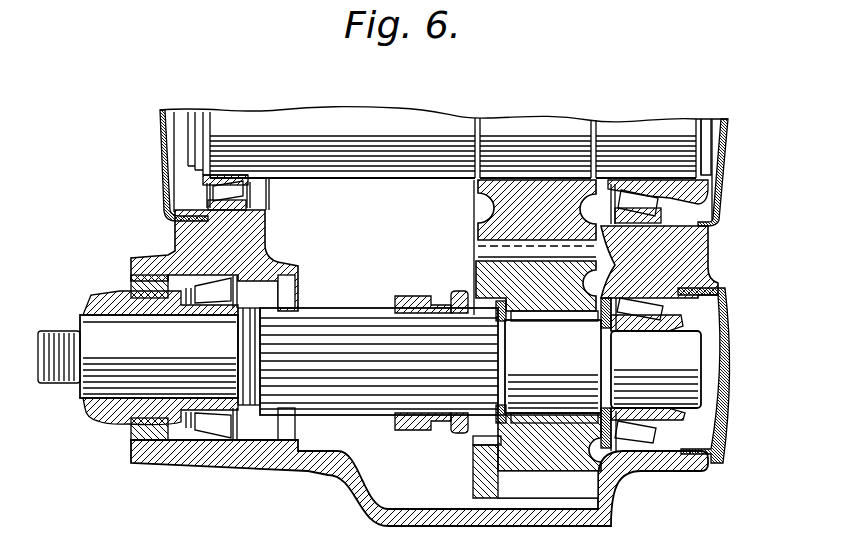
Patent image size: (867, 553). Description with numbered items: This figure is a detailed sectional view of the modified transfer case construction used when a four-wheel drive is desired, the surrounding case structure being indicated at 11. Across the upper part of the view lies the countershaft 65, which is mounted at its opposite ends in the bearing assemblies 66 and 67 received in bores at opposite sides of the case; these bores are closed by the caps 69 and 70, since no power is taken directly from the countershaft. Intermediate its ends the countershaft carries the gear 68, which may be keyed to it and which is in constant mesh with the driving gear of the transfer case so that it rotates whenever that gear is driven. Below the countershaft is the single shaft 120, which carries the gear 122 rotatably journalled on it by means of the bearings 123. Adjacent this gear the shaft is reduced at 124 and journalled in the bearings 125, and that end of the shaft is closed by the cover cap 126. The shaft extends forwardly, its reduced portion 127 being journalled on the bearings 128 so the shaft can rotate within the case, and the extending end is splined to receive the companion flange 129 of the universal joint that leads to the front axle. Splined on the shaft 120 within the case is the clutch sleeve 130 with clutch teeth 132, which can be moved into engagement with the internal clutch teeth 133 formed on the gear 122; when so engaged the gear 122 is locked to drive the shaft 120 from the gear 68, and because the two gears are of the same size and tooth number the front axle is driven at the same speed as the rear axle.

The housing body 11 is at (163, 227).
The countershaft 65 is at (398, 114).
The bearing assembly 66 is at (244, 193).
The bearing assembly 67 is at (640, 198).
The gear 68 is at (497, 204).
The cap 69 is at (152, 158).
The cap 70 is at (718, 152).
The shaft 120 is at (343, 324).
The gear 122 is at (477, 455).
The bearings 123 is at (505, 402).
The reduced portion of shaft 124 is at (680, 381).
The bearings 125 is at (640, 434).
The cover cap 126 is at (720, 318).
The reduced portion 127 is at (118, 432).
The bearings 128 is at (177, 454).
The companion flange 129 is at (92, 412).
The clutch sleeve 130 is at (393, 287).
The clutch teeth 132 is at (447, 283).
The internal clutch teeth 133 is at (468, 433).